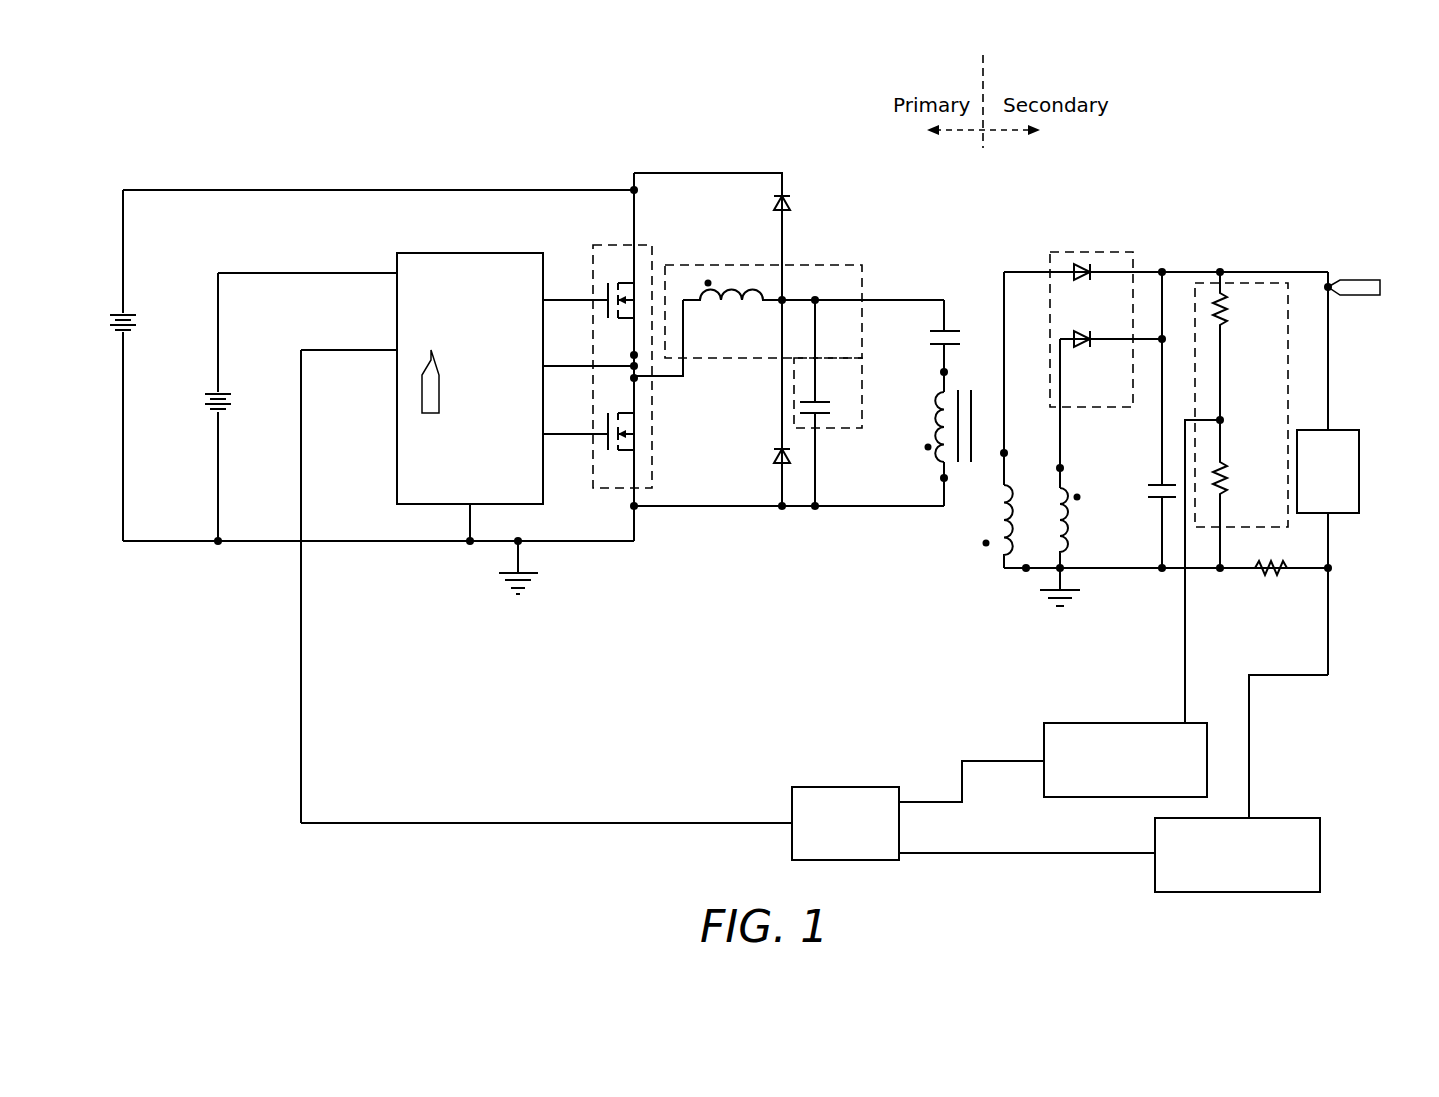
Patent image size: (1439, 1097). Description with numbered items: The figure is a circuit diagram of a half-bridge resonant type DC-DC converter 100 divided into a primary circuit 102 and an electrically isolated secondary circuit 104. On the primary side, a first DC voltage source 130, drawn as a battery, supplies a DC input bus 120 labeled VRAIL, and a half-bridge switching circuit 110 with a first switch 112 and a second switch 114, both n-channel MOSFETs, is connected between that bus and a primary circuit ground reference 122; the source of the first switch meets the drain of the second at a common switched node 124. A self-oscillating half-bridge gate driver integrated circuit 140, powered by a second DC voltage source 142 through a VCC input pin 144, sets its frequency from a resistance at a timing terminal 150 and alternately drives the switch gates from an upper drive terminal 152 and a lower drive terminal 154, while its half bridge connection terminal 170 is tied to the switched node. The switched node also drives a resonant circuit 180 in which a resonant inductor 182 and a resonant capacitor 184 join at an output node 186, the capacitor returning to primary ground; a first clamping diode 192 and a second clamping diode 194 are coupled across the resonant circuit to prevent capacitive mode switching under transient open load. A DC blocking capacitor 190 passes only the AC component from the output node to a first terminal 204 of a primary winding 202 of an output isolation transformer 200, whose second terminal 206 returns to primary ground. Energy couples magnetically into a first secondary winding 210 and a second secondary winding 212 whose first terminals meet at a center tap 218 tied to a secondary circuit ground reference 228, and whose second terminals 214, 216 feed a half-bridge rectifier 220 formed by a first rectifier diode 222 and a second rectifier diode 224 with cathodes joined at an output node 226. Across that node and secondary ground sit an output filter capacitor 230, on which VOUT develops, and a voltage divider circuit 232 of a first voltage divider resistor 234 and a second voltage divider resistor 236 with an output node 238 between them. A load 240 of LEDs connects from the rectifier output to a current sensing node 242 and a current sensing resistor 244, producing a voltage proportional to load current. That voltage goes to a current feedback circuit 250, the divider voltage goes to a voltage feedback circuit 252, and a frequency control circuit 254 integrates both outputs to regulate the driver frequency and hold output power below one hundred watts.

The half-bridge resonant type DC-DC converter 100 is at (1237, 148).
The primary circuit 102 is at (900, 192).
The secondary circuit 104 is at (1066, 192).
The half-bridge switching circuit 110 is at (593, 245).
The first switch 112 is at (636, 308).
The second switch 114 is at (636, 440).
The DC input bus 120 is at (243, 190).
The primary circuit ground reference 122 is at (530, 583).
The common switched node 124 is at (638, 380).
The first DC voltage source 130 is at (115, 325).
The self-oscillating half-bridge gate driver integrated circuit 140 is at (478, 253).
The second DC voltage source 142 is at (210, 402).
The VCC input pin 144 is at (397, 272).
The timing terminal 150 is at (397, 350).
The upper drive terminal 152 is at (548, 300).
The lower drive terminal 154 is at (546, 437).
The half bridge connection terminal 170 is at (546, 368).
The resonant circuit 180 is at (748, 265).
The resonant inductor 182 is at (712, 306).
The resonant capacitor 184 is at (815, 400).
The output node 186 is at (818, 298).
The DC blocking capacitor 190 is at (950, 330).
The first clamping diode 192 is at (790, 206).
The second clamping diode 194 is at (780, 466).
The output isolation transformer 200 is at (1002, 460).
The primary winding 202 is at (938, 420).
The first terminal of primary winding 204 is at (940, 374).
The second terminal of primary winding 206 is at (940, 480).
The first secondary winding 210 is at (1012, 520).
The second secondary winding 212 is at (1066, 508).
The second terminal of first secondary winding 214 is at (1006, 452).
The second terminal of second secondary winding 216 is at (1082, 456).
The center tap 218 is at (1026, 572).
The half-bridge rectifier 220 is at (1090, 255).
The first rectifier diode 222 is at (1086, 279).
The second rectifier diode 224 is at (1086, 346).
The output node of half-bridge rectifier 226 is at (1164, 268).
The secondary circuit ground reference 228 is at (1070, 598).
The output filter capacitor 230 is at (1156, 483).
The voltage divider circuit 232 is at (1250, 283).
The first voltage divider resistor 234 is at (1226, 296).
The second voltage divider resistor 236 is at (1226, 490).
The output node of voltage divider 238 is at (1223, 420).
The load 240 is at (1342, 430).
The current sensing node 242 is at (1332, 570).
The current sensing resistor 244 is at (1274, 582).
The current feedback circuit 250 is at (1280, 818).
The voltage feedback circuit 252 is at (1107, 723).
The frequency control circuit 254 is at (840, 787).